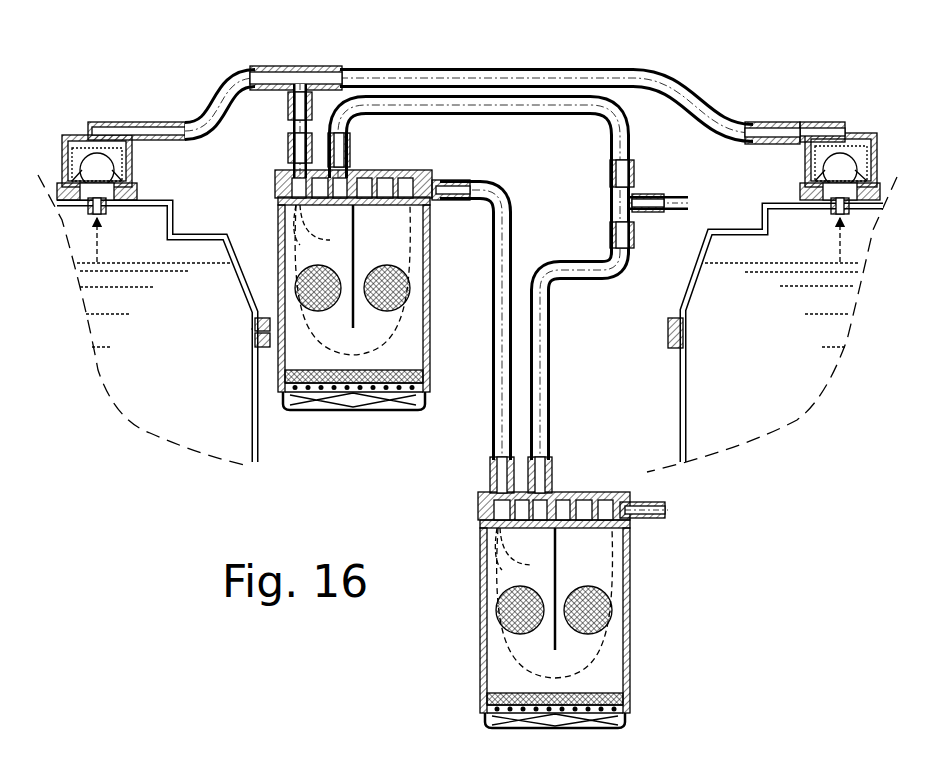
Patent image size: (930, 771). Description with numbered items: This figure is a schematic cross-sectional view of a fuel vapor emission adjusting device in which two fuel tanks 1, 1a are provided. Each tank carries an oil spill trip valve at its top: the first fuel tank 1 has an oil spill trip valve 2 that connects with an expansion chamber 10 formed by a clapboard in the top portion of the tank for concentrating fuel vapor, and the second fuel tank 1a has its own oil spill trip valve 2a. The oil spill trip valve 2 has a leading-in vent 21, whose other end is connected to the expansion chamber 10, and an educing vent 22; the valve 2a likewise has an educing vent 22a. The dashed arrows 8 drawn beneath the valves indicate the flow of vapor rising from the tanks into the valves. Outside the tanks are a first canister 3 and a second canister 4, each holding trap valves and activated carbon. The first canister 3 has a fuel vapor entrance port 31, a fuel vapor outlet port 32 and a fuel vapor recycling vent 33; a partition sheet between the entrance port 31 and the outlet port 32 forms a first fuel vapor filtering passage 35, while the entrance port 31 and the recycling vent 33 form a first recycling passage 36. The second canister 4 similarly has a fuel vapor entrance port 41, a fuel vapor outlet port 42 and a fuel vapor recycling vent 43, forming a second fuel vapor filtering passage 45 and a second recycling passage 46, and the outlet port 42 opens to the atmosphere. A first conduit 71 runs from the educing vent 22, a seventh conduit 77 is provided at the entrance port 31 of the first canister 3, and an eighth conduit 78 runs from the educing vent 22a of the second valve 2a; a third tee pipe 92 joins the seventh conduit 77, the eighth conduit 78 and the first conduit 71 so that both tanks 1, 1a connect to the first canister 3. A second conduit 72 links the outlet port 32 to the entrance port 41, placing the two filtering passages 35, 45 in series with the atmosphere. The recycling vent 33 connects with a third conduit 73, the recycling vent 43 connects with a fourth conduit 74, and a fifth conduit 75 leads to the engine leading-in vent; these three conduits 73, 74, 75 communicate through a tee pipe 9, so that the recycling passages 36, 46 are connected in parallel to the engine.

The fuel tank 1 is at (257, 437).
The second fuel tank 1a is at (680, 372).
The oil spill trip valve 2 is at (97, 125).
The oil spill trip valve of second fuel tank 2a is at (825, 125).
The first canister 3 is at (353, 414).
The second canister 4 is at (646, 592).
The flow direction 8 is at (73, 257).
The tee pipe 9 is at (612, 208).
The expansion chamber 10 is at (158, 242).
The leading-in vent 21 is at (136, 192).
The educing vent 22 is at (110, 125).
The educing vent of second oil spill trip valve 22a is at (838, 128).
The fuel vapor entrance port 31 is at (290, 162).
The fuel vapor outlet port 32 is at (447, 200).
The fuel vapor recycling vent 33 is at (344, 168).
The first fuel vapor filtering passage 35 is at (415, 355).
The first recycling passage 36 is at (292, 236).
The fuel vapor entrance port 41 is at (488, 484).
The fuel vapor outlet port 42 is at (645, 520).
The fuel vapor recycling vent 43 is at (548, 480).
The second fuel vapor filtering passage 45 is at (624, 672).
The second recycling passage 46 is at (488, 552).
The first conduit 71 is at (230, 78).
The second conduit 72 is at (513, 250).
The third conduit 73 is at (500, 118).
The fourth conduit 74 is at (552, 398).
The fifth conduit 75 is at (673, 193).
The seventh conduit 77 is at (288, 124).
The eighth conduit 78 is at (690, 100).
The third tee pipe 92 is at (300, 68).